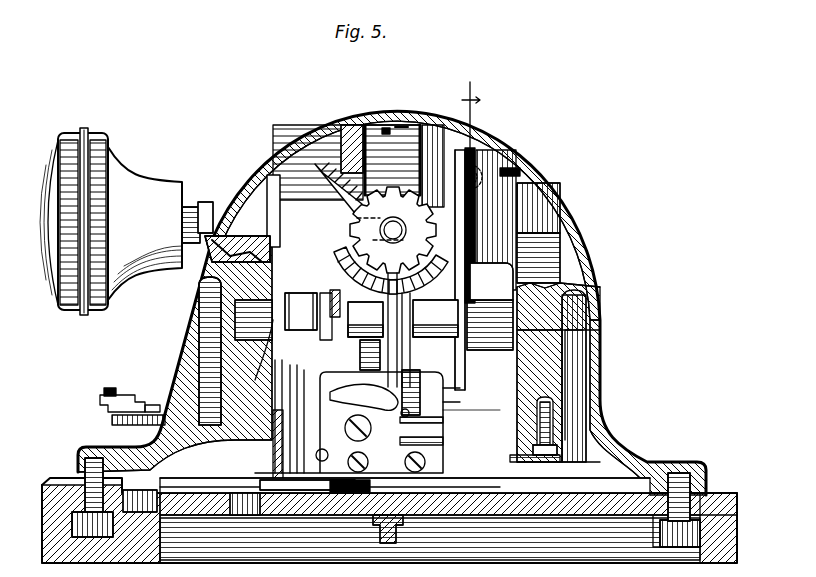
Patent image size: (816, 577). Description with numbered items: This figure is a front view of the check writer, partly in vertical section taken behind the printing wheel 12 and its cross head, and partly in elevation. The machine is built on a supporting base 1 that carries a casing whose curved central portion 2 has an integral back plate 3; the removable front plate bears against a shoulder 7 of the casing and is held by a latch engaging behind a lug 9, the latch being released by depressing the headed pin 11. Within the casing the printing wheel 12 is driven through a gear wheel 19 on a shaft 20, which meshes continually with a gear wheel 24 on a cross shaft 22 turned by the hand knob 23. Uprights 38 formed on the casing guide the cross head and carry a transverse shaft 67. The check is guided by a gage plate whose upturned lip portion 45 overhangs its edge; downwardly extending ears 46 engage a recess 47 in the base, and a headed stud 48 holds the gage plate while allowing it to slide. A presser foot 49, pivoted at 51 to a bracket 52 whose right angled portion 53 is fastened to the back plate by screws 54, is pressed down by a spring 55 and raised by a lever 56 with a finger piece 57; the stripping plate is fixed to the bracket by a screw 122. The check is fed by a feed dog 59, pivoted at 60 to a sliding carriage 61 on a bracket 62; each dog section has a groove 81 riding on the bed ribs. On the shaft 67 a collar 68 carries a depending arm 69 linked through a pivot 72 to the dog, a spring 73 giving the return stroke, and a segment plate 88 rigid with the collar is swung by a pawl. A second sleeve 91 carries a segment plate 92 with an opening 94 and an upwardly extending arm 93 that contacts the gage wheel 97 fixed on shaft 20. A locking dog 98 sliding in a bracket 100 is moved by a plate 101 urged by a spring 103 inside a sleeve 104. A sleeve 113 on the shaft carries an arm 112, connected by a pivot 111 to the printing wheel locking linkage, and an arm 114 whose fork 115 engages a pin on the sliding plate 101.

The supporting base 1 is at (583, 505).
The curved central portion 2 is at (550, 338).
The back plate 3 is at (578, 380).
The shoulder 7 is at (402, 127).
The lug 9 is at (385, 130).
The headed pin 11 is at (392, 160).
The printing wheel 12 is at (470, 114).
The gear wheel 19 is at (423, 205).
The shaft 20 is at (393, 230).
The cross shaft 22 is at (191, 214).
The hand knob 23 is at (111, 222).
The gear wheel 24 is at (347, 188).
The uprights 38 is at (574, 360).
The upturned lip portion 45 is at (82, 472).
The downwardly extending ears 46 is at (203, 494).
The recess 47 is at (333, 500).
The headed stud 48 is at (262, 470).
The presser foot 49 is at (368, 424).
The pivot 51 is at (377, 422).
The bracket 52 is at (440, 421).
The right angled portion of bracket 53 is at (430, 443).
The screws 54 is at (412, 417).
The spring 55 is at (364, 402).
The lever 56 is at (103, 406).
The finger piece 57 is at (110, 388).
The feed dog 59 is at (265, 390).
The pivot 60 is at (272, 440).
The sliding carriage 61 is at (342, 460).
The bracket 62 is at (230, 451).
The shaft 67 is at (505, 320).
The collar 68 is at (268, 328).
The depending arm 69 is at (275, 345).
The pivot 72 is at (420, 517).
The spring 73 is at (237, 246).
The groove 81 is at (296, 490).
The segment plate 88 is at (350, 273).
The second sleeve 91 is at (351, 315).
The segment plate 92 is at (365, 342).
The upwardly extending arm 93 is at (391, 270).
The opening 94 is at (410, 388).
The gage wheel 97 is at (465, 286).
The locking dog 98 is at (345, 253).
The bracket 100 is at (484, 158).
The plate 101 is at (470, 150).
The spring 103 is at (552, 172).
The sleeve 104 is at (500, 178).
The pivot 111 is at (420, 402).
The arm 112 is at (411, 353).
The sleeve 113 is at (423, 330).
The arm 114 is at (460, 268).
The fork 115 is at (457, 247).
The screw 122 is at (366, 463).